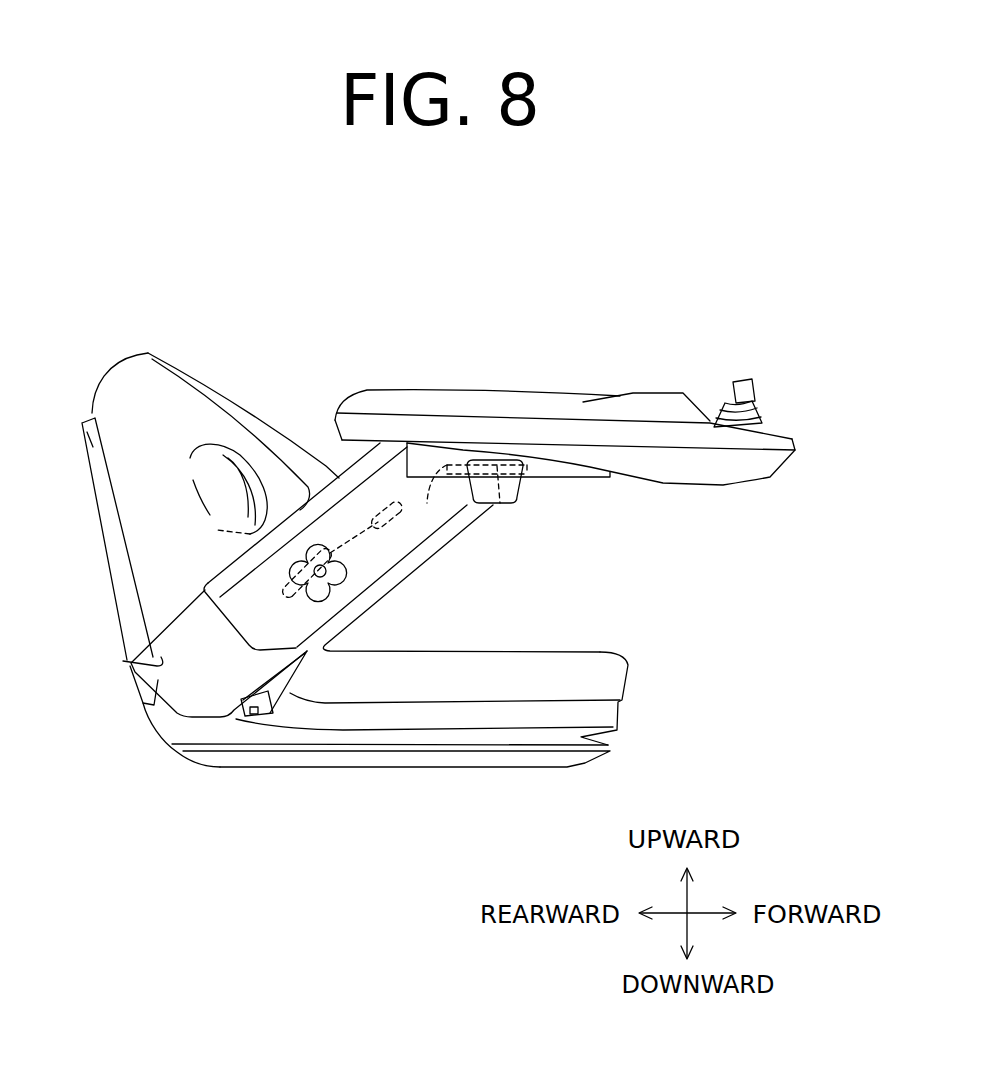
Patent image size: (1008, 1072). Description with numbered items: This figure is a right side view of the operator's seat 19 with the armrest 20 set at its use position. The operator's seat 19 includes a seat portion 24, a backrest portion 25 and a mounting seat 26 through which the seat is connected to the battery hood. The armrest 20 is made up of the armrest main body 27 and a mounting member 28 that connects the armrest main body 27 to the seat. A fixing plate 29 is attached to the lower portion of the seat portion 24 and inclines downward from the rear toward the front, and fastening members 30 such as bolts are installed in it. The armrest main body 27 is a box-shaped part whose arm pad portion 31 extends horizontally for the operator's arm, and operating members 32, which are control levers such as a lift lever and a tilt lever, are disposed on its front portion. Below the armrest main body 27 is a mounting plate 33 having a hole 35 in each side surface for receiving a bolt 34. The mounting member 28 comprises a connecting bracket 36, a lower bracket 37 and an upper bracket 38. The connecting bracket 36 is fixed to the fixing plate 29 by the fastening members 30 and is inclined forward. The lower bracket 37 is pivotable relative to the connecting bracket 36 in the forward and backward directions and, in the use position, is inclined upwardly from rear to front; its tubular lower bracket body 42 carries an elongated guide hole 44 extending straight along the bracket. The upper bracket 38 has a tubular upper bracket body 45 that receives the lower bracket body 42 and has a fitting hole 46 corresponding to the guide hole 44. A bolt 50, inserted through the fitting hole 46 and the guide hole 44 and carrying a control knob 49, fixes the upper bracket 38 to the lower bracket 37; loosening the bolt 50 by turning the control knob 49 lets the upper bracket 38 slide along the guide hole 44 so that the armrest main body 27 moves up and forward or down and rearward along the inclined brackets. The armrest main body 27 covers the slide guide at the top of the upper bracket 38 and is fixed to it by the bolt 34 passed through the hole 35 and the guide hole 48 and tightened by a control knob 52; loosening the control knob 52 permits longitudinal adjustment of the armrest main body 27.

The operator's seat 19 is at (126, 318).
The armrest 20 is at (625, 318).
The seat portion 24 is at (624, 670).
The backrest portion 25 is at (197, 391).
The mounting seat 26 is at (549, 763).
The armrest main body 27 is at (731, 476).
The mounting member 28 is at (482, 588).
The fixing plate 29 is at (268, 715).
The fastening members 30 is at (253, 716).
The arm pad portion 31 is at (493, 389).
The operating members 32 is at (755, 390).
The mounting plate 33 is at (596, 478).
The bolt 34 is at (500, 503).
The hole 35 is at (526, 490).
The connecting bracket 36 is at (289, 675).
The lower bracket 37 is at (178, 727).
The upper bracket 38 is at (447, 548).
The lower bracket body 42 is at (136, 672).
The guide hole 44 is at (382, 528).
The upper bracket body 45 is at (223, 585).
The fitting hole 46 is at (344, 581).
The guide hole 48 is at (426, 499).
The control knob 49 is at (306, 600).
The bolt 50 is at (336, 598).
The control knob 52 is at (517, 503).